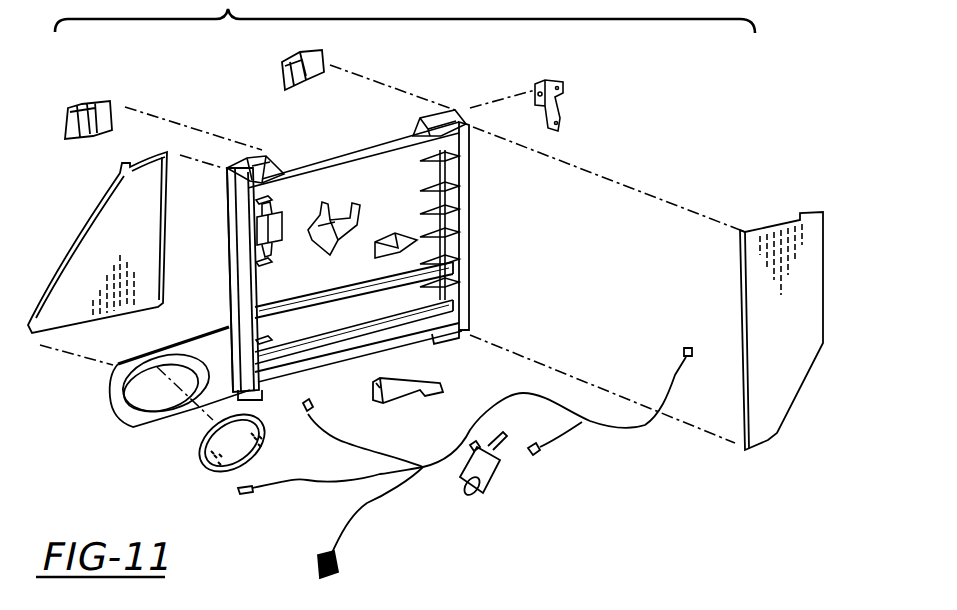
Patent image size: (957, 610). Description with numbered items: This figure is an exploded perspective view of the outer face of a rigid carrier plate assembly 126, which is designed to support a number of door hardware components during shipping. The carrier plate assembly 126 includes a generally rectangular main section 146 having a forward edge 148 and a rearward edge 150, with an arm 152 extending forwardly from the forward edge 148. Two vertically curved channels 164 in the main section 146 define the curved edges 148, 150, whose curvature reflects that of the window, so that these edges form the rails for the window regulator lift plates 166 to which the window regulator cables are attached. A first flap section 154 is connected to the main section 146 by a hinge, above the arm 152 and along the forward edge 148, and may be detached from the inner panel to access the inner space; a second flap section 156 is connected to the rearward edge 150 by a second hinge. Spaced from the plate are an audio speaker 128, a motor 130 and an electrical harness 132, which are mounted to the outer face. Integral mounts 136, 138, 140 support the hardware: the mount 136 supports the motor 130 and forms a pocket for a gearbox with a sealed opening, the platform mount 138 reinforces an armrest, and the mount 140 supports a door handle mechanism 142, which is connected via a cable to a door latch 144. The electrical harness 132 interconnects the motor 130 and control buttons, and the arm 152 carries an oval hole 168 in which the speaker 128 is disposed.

The carrier plate assembly 126 is at (628, 166).
The audio speaker 128 is at (222, 466).
The motor 130 is at (497, 468).
The electrical harness 132 is at (640, 427).
The mount 136 is at (340, 210).
The platform mount 138 is at (445, 242).
The mount 140 is at (283, 222).
The door handle mechanism 142 is at (440, 395).
The door latch 144 is at (563, 92).
The main section 146 is at (400, 152).
The forward edge 148 is at (229, 162).
The rearward edge 150 is at (469, 193).
The arm 152 is at (226, 333).
The first flap section 154 is at (70, 245).
The second flap section 156 is at (760, 276).
The vertically curved channels 164 is at (460, 108).
The window regulator lift plates 166 is at (76, 104).
The oval hole 168 is at (138, 412).